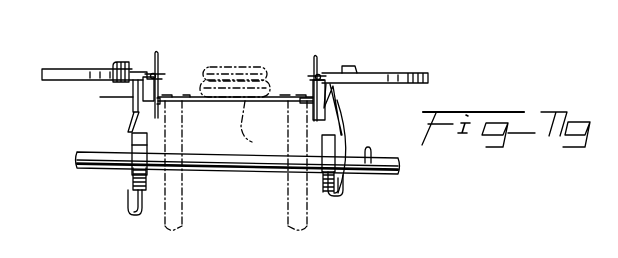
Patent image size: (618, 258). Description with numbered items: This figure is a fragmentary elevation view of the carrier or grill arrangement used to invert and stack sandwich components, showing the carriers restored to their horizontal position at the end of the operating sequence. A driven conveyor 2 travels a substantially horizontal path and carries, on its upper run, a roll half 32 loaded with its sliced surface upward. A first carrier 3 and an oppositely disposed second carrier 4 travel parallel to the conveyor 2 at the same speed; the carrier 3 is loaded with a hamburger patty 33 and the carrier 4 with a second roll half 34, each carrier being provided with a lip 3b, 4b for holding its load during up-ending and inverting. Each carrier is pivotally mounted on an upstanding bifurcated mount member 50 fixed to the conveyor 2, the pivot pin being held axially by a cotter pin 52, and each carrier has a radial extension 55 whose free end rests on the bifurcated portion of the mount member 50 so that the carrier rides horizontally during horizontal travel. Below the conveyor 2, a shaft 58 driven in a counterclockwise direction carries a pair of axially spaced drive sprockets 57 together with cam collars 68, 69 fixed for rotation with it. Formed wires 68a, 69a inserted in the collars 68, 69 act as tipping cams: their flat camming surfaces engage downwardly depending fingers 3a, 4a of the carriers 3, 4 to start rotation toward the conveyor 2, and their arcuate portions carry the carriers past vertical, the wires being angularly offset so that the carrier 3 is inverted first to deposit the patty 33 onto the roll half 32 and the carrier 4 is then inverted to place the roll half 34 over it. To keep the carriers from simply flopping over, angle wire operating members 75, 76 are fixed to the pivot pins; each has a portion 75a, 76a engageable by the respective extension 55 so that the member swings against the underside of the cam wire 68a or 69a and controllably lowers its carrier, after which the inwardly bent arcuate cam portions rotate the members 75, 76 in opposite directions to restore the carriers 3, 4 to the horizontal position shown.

The conveyor 2 is at (205, 101).
The carrier 3 is at (60, 72).
The downwardly depending extension or finger 3a is at (100, 97).
The lip 3b is at (126, 63).
The carrier 4 is at (402, 72).
The downwardly depending extension or finger 4a is at (340, 96).
The lip 4b is at (348, 66).
The roll half 32 is at (256, 128).
The hamburger patty 33 is at (229, 78).
The roll half 34 is at (254, 66).
The bifurcated mount member 50 is at (158, 87).
The cotter pin 52 is at (142, 72).
The radial extension 55 is at (148, 72).
The drive sprocket 57 is at (295, 218).
The shaft 58 is at (78, 155).
The collar 68 is at (132, 182).
The formed wire 68a is at (132, 146).
The collar 69 is at (340, 182).
The formed wire 69a is at (370, 155).
The angle wire operating member 75 is at (138, 113).
The portion 75a is at (158, 61).
The angle wire operating member 76 is at (343, 115).
The portion 76a is at (318, 62).